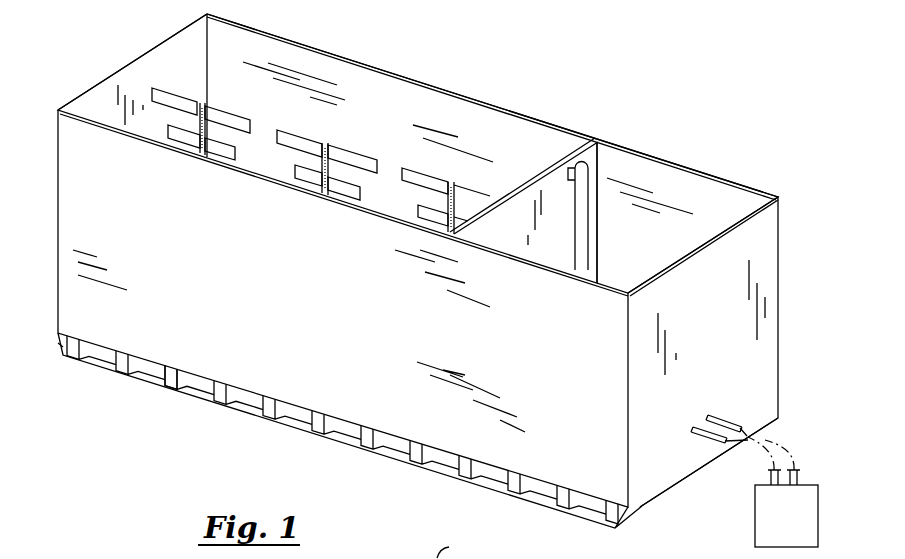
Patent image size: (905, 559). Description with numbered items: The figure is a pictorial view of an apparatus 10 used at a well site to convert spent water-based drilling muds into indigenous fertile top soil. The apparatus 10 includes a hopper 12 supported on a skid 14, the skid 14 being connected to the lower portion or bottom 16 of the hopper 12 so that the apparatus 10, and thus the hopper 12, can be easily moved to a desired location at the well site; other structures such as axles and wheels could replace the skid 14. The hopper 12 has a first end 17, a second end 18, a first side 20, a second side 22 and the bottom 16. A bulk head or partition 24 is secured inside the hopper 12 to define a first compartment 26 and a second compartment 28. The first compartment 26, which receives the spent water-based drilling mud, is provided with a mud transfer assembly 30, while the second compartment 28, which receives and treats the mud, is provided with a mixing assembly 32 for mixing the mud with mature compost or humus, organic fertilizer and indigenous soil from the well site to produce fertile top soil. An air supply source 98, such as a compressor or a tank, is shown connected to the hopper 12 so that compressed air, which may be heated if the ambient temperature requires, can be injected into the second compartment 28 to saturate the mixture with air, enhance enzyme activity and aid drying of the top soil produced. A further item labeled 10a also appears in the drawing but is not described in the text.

The apparatus 10 is at (658, 96).
The second container 10a is at (461, 549).
The hopper 12 is at (554, 115).
The skid 14 is at (247, 418).
The bottom 16 is at (152, 360).
The first end 17 is at (768, 273).
The second end 18 is at (138, 57).
The first side 20 is at (328, 327).
The second side 22 is at (468, 92).
The partition 24 is at (496, 225).
The first compartment 26 is at (698, 187).
The second compartment 28 is at (343, 70).
The mud transfer assembly 30 is at (592, 192).
The mixing assembly 32 is at (347, 140).
The air supply source 98 is at (755, 508).